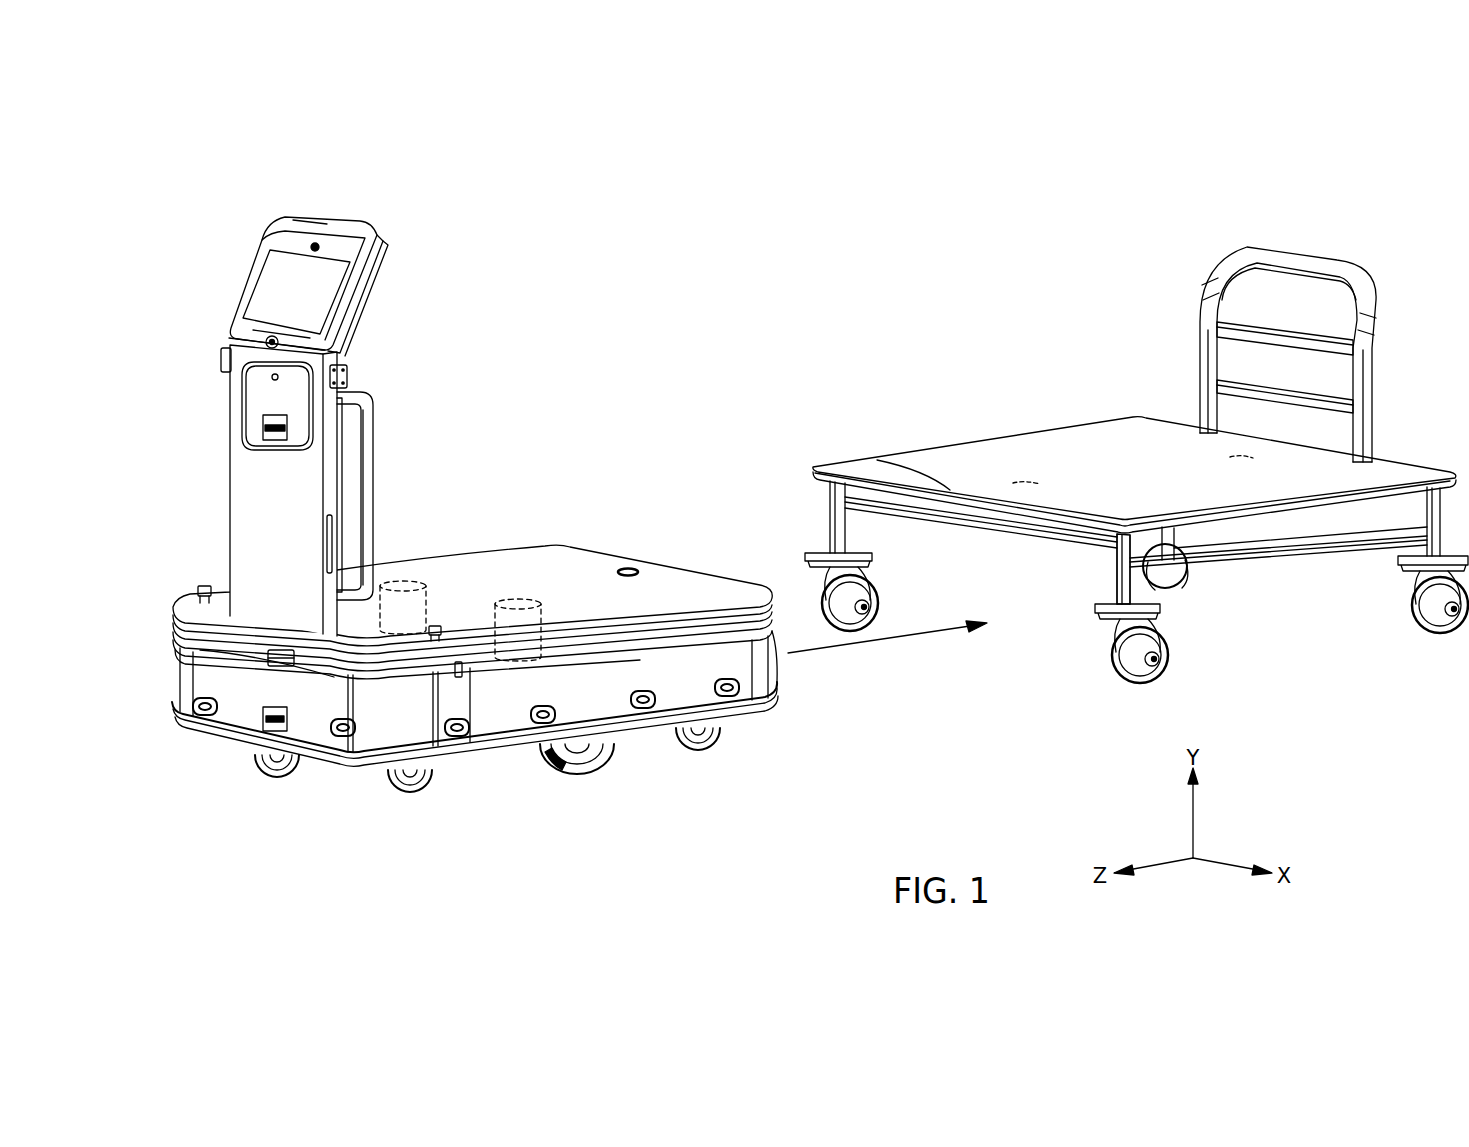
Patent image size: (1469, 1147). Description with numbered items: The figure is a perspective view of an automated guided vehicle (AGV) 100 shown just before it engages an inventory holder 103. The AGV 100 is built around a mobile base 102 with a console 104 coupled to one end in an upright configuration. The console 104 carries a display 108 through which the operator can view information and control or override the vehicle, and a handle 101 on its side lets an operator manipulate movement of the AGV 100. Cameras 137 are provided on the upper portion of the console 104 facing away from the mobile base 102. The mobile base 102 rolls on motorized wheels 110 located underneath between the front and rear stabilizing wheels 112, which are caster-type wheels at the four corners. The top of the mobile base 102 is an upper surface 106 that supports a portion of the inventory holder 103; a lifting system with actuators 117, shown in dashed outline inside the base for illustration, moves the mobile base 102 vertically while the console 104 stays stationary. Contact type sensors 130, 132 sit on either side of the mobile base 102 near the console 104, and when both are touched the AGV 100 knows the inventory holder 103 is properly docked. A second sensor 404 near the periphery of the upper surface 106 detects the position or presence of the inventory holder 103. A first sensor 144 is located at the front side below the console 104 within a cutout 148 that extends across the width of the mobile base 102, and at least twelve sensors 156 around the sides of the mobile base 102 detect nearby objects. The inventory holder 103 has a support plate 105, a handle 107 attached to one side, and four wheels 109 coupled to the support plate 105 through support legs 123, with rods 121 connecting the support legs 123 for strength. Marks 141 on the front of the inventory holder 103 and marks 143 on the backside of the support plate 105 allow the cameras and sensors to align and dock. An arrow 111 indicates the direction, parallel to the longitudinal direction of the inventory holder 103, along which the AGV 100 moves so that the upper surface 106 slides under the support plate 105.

The automated guided vehicle (AGV) 100 is at (532, 215).
The handle 101 is at (367, 449).
The mobile base 102 is at (158, 670).
The inventory holder 103 is at (973, 295).
The console 104 is at (204, 410).
The support plate 105 is at (957, 438).
The upper surface 106 is at (566, 548).
The handle 107 is at (1205, 353).
The display 108 is at (280, 278).
The wheels 109 is at (1168, 647).
The motorized wheels 110 is at (583, 770).
The arrow 111 is at (927, 627).
The stabilizing wheels 112 is at (395, 790).
The actuators 117 is at (518, 603).
The rods 121 is at (1270, 553).
The support legs 123 is at (1120, 562).
The contact type sensor 130 is at (437, 630).
The contact type sensor 132 is at (203, 585).
The cameras 137 is at (315, 247).
The marks 141 is at (867, 460).
The marks 143 is at (1230, 457).
The first sensor 144 is at (273, 663).
The cutout 148 is at (323, 683).
The sensors 156 is at (457, 738).
The second sensor 404 is at (630, 569).